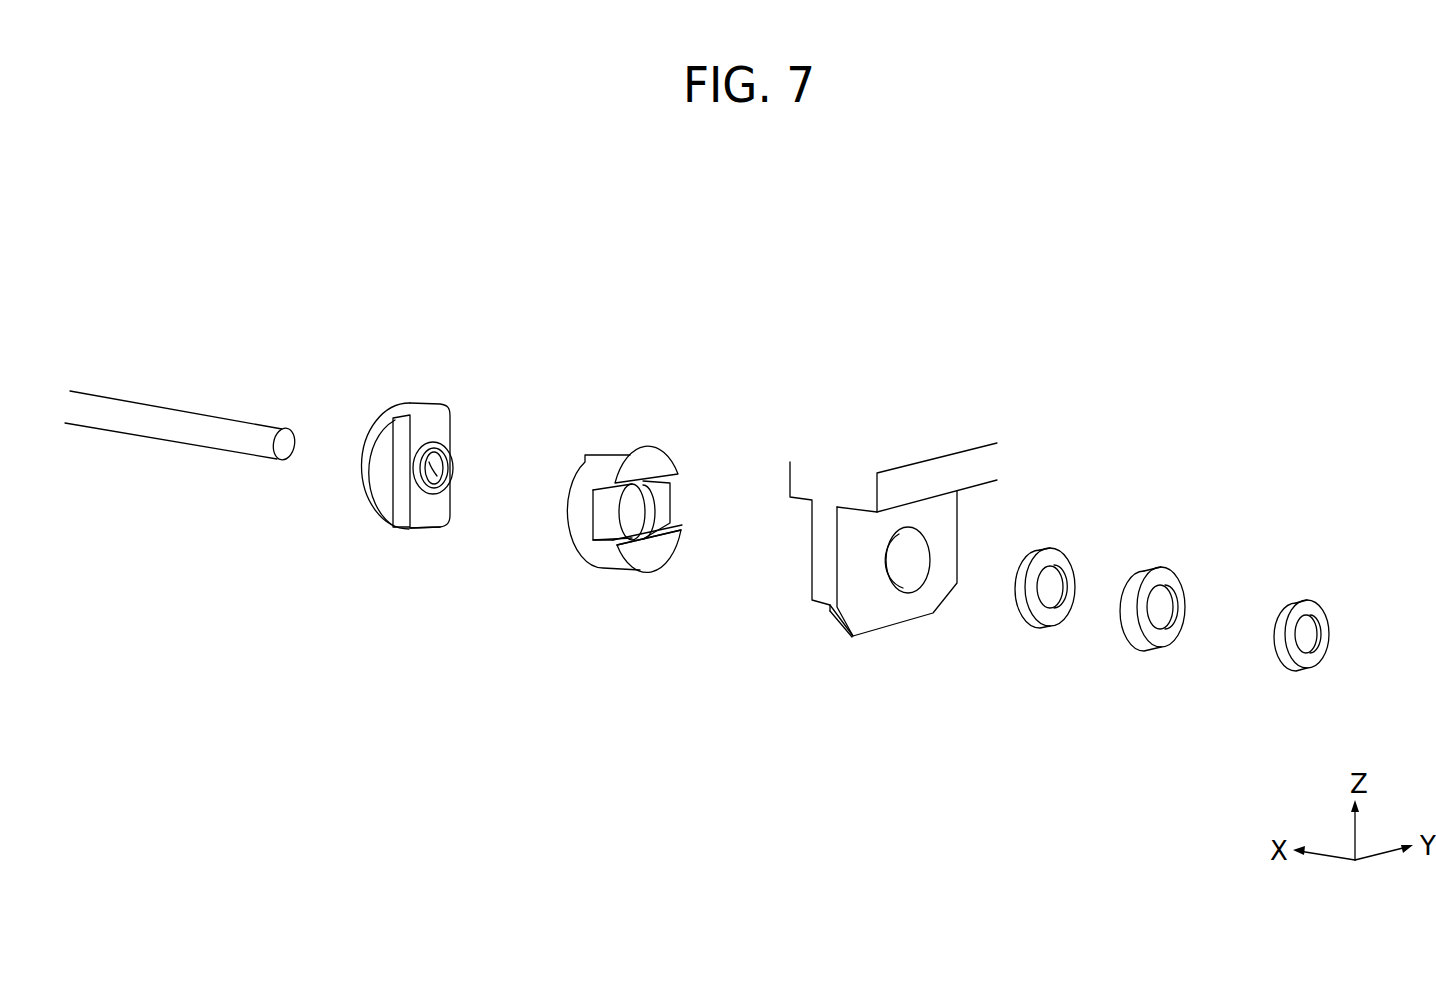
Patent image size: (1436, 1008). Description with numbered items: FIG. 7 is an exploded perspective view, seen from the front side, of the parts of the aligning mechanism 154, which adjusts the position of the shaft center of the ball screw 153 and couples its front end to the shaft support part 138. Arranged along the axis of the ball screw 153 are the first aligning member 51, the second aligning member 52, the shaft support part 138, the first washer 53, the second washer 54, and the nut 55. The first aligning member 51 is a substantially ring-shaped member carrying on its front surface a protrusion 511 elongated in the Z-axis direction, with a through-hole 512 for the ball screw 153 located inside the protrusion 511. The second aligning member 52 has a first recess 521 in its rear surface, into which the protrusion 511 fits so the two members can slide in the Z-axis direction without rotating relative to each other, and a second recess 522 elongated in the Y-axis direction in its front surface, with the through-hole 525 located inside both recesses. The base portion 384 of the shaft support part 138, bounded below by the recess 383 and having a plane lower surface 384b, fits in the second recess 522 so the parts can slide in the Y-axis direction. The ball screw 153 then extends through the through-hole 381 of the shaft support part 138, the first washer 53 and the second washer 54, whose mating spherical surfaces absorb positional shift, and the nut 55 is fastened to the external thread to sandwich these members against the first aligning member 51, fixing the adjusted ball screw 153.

The aligning mechanism 154 is at (414, 268).
The ball screw 153 is at (207, 428).
The first aligning member 51 is at (438, 510).
The protrusion 511 is at (437, 428).
The through-hole 512 is at (437, 529).
The second aligning member 52 is at (662, 526).
The first recess 521 is at (607, 455).
The second recess 522 is at (662, 505).
The through-hole 525 is at (650, 538).
The shaft support part 138 is at (862, 591).
The through-hole 381 is at (900, 592).
The recess 383 is at (835, 633).
The base portion 384 is at (822, 578).
The lower surface 384b is at (820, 608).
The first washer 53 is at (1055, 640).
The second washer 54 is at (1162, 657).
The nut 55 is at (1305, 681).